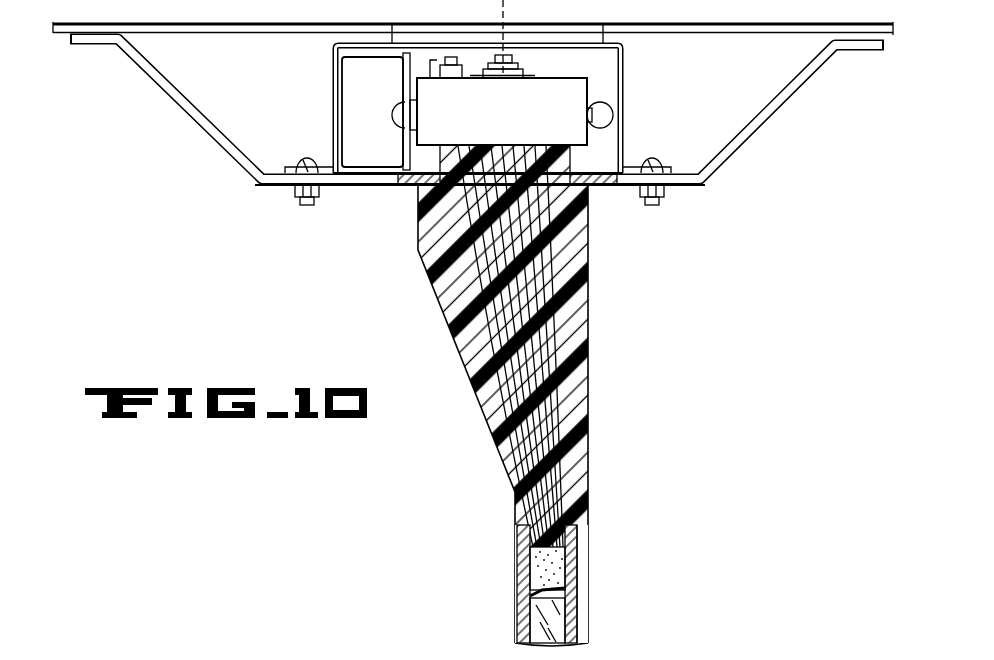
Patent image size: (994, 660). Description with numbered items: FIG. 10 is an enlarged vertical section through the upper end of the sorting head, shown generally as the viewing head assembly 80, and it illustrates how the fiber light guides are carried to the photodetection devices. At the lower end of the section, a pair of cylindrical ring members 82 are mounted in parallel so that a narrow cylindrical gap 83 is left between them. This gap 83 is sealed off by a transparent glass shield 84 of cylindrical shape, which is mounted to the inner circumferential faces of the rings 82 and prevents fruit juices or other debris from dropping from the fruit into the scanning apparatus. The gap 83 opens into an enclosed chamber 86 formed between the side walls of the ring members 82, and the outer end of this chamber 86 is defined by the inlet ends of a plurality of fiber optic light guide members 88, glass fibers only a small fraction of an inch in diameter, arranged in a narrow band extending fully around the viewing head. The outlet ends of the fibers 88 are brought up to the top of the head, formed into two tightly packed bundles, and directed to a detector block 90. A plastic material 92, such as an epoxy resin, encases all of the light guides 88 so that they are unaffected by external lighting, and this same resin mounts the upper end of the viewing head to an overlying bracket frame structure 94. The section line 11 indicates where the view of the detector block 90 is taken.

The section line 11 is at (512, 5).
The strut assembly 80 is at (554, 395).
The cylindrical ring members 82 is at (518, 540).
The cylindrical gap 83 is at (555, 593).
The transparent glass shield 84 is at (533, 597).
The enclosed chamber 86 is at (535, 560).
The fiber optic light guide members 88 is at (550, 433).
The detector block 90 is at (516, 118).
The plastic material 92 is at (580, 282).
The bracket frame structure 94 is at (720, 160).